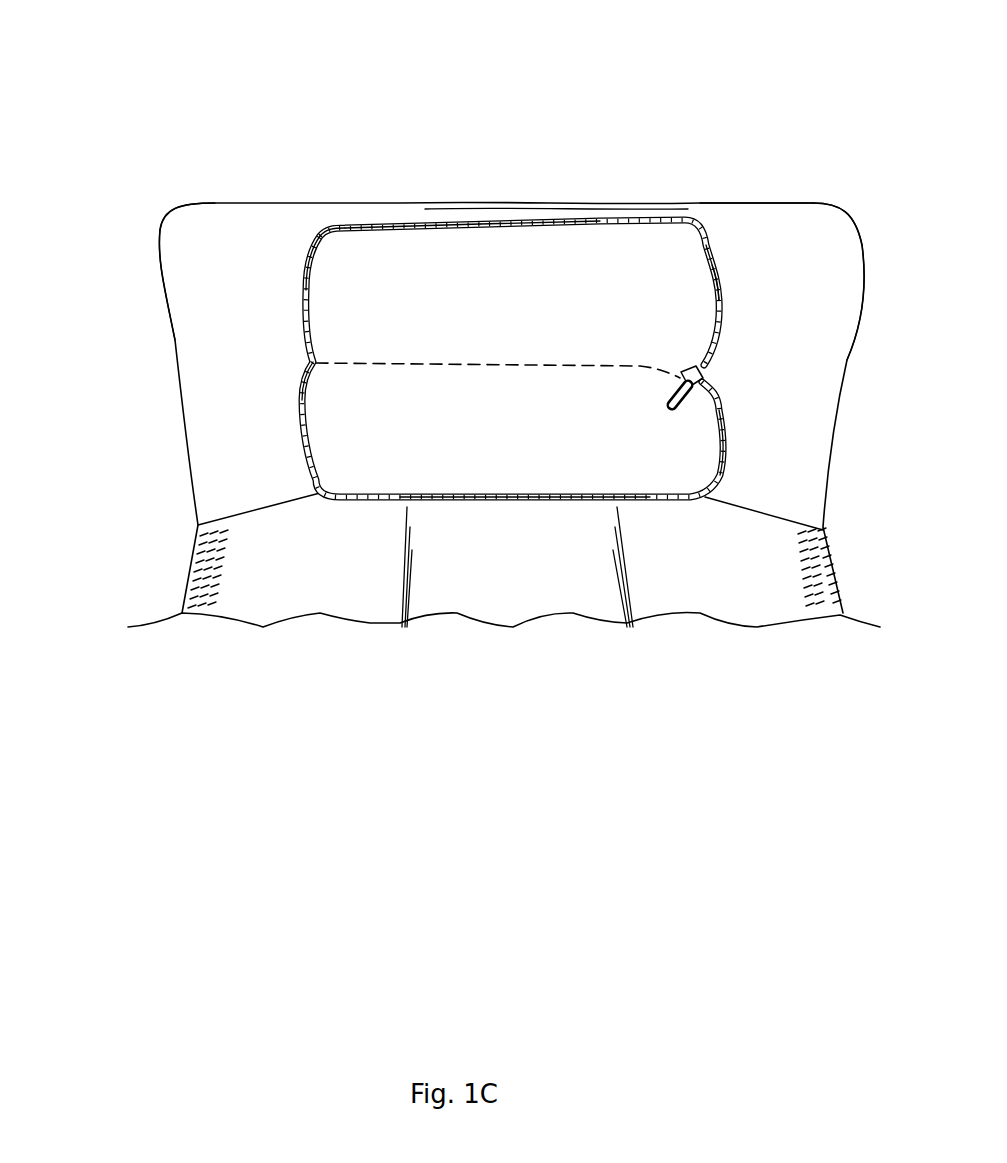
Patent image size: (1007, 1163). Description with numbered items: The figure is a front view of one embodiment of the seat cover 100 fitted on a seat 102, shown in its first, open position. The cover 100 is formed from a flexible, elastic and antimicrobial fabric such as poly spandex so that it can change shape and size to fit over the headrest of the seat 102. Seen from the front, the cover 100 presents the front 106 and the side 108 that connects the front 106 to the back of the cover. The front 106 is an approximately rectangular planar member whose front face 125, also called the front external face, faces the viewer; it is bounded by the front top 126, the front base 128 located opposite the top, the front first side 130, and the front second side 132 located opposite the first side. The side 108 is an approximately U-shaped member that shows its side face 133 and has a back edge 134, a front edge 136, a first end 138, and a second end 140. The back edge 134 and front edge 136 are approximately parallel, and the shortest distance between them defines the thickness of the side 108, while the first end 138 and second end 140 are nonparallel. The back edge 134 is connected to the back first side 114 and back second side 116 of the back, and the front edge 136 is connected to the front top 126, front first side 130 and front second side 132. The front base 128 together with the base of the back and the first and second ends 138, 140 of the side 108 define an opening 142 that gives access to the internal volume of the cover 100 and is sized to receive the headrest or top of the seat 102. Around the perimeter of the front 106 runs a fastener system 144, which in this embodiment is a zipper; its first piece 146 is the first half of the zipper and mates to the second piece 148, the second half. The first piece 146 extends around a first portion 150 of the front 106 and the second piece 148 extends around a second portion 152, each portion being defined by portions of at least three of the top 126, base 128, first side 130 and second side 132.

The seat cover 100 is at (142, 92).
The seat 102 is at (837, 570).
The front 106 is at (670, 237).
The side 108 is at (830, 238).
The back first side 114 is at (847, 360).
The back second side 116 is at (178, 360).
The front face 125 is at (620, 245).
The front top 126 is at (600, 207).
The front base 128 is at (527, 500).
The front first side 130 is at (723, 393).
The front second side 132 is at (300, 308).
The side face 133 is at (172, 238).
The back edge 134 is at (500, 203).
The front edge 136 is at (410, 220).
The first end 138 is at (780, 477).
The second end 140 is at (247, 480).
The opening 142 is at (460, 530).
The fastener system 144 is at (717, 237).
The first piece 146 is at (723, 317).
The second piece 148 is at (730, 433).
The first portion 150 is at (322, 244).
The second portion 152 is at (322, 424).